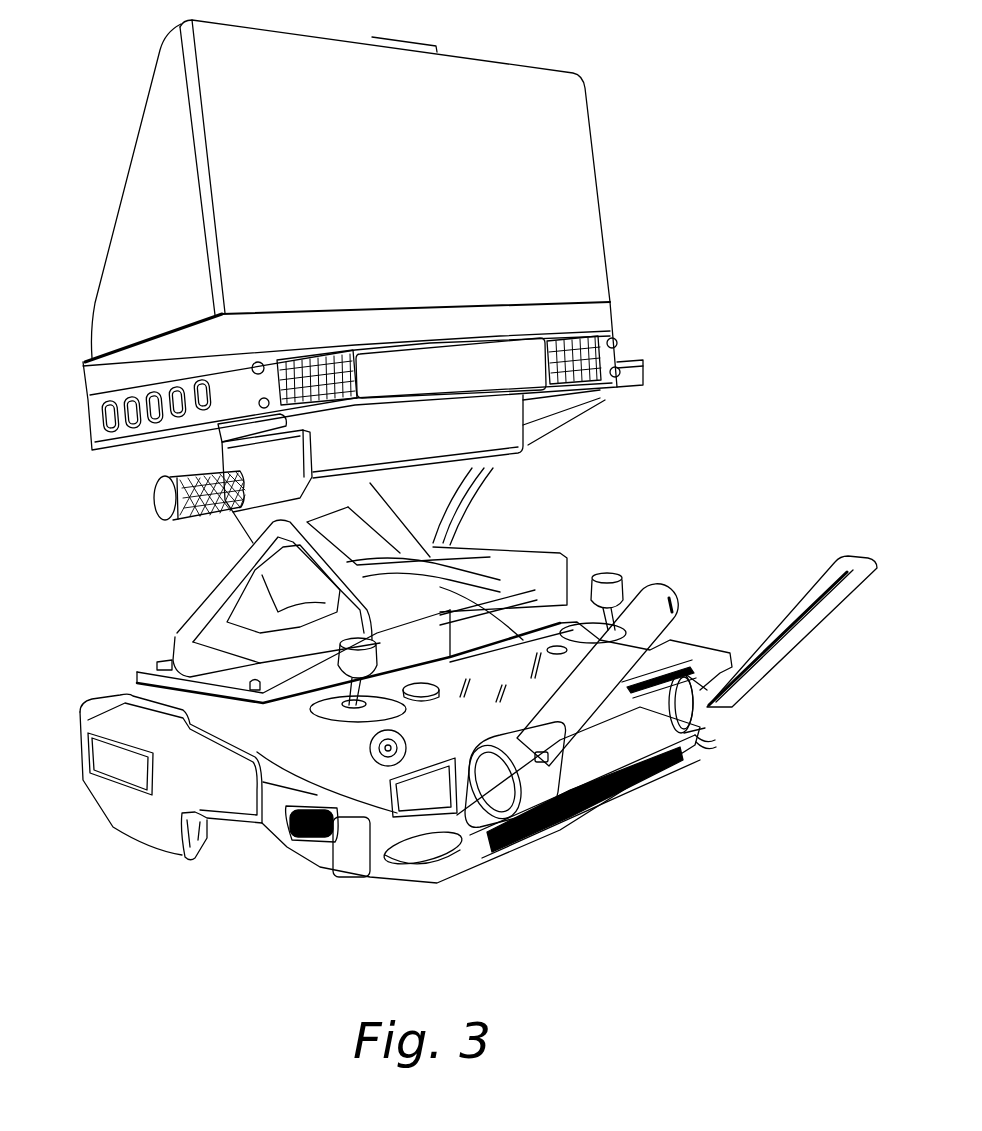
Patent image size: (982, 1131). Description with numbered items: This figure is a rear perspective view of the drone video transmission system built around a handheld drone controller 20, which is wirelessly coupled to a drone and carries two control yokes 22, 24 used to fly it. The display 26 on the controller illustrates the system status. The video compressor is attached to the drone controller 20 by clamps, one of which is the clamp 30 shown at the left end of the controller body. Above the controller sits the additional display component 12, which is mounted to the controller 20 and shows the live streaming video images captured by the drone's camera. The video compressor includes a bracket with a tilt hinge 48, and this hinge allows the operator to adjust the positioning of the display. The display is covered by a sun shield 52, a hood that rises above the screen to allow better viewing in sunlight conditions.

The display component 12 is at (85, 452).
The drone controller 20 is at (633, 795).
The control yoke 22 is at (622, 573).
The control yoke 24 is at (362, 665).
The display 26 is at (523, 695).
The clamp 30 is at (170, 835).
The tilt hinge 48 is at (158, 503).
The sun shield 52 is at (596, 152).